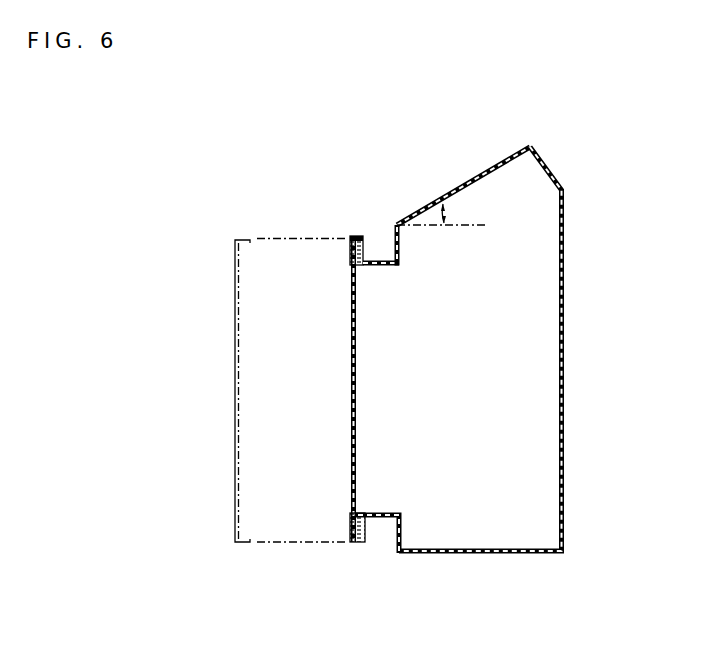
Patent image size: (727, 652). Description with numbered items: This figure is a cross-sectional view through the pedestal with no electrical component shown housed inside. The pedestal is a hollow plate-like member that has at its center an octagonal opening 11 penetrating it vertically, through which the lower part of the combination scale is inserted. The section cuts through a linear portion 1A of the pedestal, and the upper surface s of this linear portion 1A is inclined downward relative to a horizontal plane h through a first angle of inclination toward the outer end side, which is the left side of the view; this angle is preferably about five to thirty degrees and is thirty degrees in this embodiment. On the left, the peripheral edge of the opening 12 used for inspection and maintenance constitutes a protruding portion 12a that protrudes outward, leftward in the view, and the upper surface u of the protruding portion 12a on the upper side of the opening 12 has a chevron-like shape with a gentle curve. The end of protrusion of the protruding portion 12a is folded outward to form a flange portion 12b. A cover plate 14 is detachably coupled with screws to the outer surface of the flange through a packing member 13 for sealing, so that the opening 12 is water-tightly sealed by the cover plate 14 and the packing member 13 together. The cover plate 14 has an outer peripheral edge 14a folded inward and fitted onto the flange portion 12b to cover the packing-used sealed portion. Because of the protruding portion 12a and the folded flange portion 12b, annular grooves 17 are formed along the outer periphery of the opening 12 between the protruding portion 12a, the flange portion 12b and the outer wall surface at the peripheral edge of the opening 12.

The linear portion 1A is at (432, 348).
The opening 11 is at (394, 348).
The opening 12 is at (378, 392).
The protruding portion 12a is at (387, 267).
The flange portion 12b is at (368, 247).
The packing member 13 is at (357, 267).
The cover plate 14 is at (352, 458).
The outer peripheral edge 14a is at (352, 236).
The annular groove 17 is at (377, 232).
The upper surface s is at (473, 175).
The upper surface u is at (380, 258).
The horizontal plane h is at (430, 228).